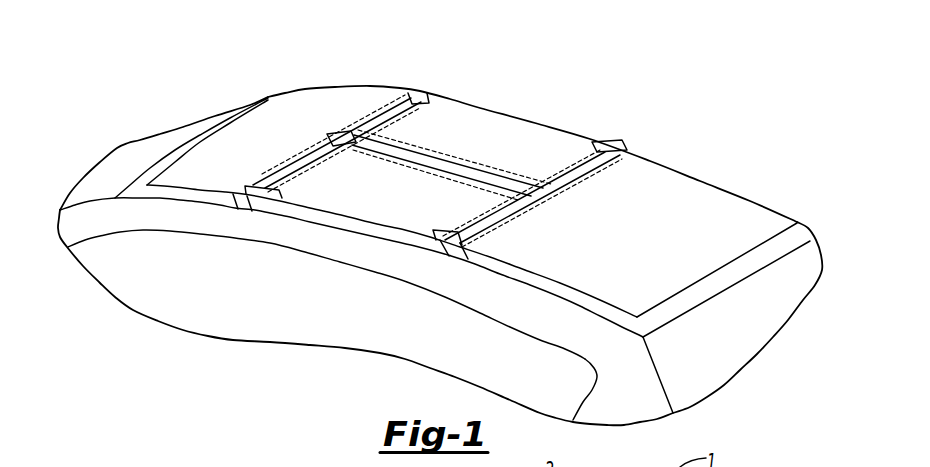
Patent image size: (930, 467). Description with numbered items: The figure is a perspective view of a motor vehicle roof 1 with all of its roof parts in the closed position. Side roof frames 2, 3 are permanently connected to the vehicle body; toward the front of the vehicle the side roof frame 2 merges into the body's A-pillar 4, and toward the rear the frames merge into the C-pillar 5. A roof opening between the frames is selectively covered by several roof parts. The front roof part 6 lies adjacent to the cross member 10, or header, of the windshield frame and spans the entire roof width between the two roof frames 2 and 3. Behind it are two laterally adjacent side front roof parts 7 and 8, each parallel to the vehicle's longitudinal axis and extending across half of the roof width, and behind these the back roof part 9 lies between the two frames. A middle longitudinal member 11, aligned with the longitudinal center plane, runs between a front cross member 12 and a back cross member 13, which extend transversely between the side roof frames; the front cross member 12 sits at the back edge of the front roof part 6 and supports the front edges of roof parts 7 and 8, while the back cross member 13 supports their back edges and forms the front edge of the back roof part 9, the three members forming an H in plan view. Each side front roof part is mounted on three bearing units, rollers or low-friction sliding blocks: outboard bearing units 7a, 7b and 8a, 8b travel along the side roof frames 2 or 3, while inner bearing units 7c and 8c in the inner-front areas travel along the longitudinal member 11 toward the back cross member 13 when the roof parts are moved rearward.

The motor vehicle roof 1 is at (582, 84).
The side roof frame 2 is at (398, 235).
The side roof frame 3 is at (533, 118).
The A-pillar 4 is at (82, 228).
The C-pillar 5 is at (633, 395).
The front roof part 6 is at (330, 97).
The side front roof part 7 is at (378, 198).
The outboard bearing unit 7a is at (256, 185).
The outboard bearing unit 7b is at (447, 237).
The inner bearing unit 7c is at (325, 135).
The side front roof part 8 is at (452, 122).
The outboard bearing unit 8a is at (413, 92).
The outboard bearing unit 8b is at (607, 147).
The inner bearing unit 8c is at (358, 132).
The back roof part 9 is at (692, 195).
The cross member 10 is at (167, 157).
The middle longitudinal member 11 is at (467, 167).
The front cross member 12 is at (366, 113).
The back cross member 13 is at (587, 173).